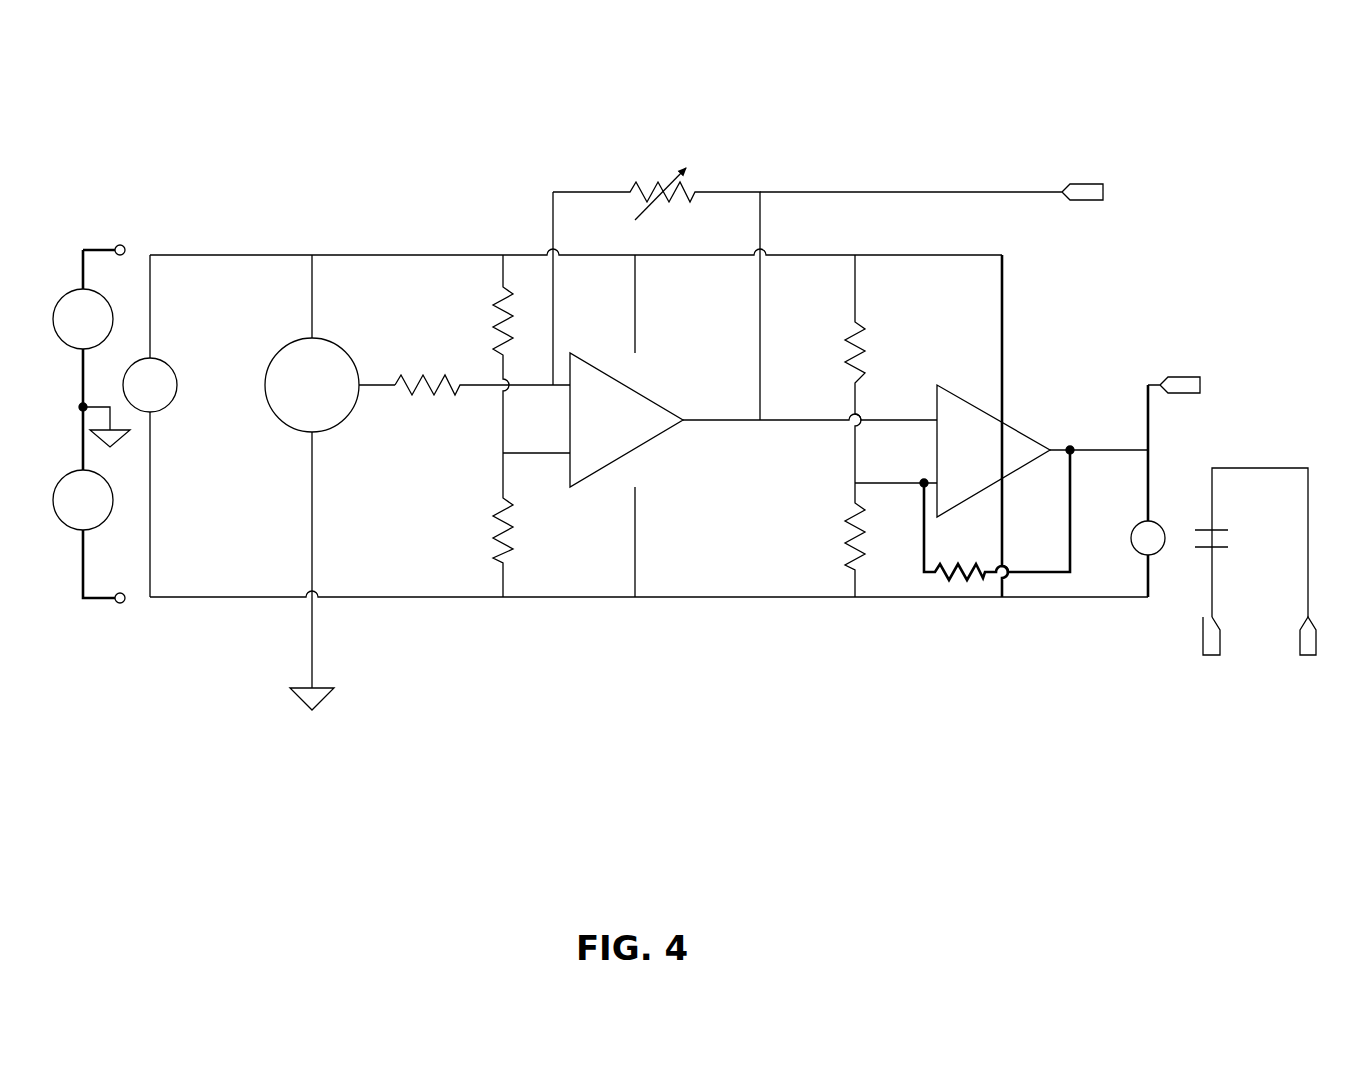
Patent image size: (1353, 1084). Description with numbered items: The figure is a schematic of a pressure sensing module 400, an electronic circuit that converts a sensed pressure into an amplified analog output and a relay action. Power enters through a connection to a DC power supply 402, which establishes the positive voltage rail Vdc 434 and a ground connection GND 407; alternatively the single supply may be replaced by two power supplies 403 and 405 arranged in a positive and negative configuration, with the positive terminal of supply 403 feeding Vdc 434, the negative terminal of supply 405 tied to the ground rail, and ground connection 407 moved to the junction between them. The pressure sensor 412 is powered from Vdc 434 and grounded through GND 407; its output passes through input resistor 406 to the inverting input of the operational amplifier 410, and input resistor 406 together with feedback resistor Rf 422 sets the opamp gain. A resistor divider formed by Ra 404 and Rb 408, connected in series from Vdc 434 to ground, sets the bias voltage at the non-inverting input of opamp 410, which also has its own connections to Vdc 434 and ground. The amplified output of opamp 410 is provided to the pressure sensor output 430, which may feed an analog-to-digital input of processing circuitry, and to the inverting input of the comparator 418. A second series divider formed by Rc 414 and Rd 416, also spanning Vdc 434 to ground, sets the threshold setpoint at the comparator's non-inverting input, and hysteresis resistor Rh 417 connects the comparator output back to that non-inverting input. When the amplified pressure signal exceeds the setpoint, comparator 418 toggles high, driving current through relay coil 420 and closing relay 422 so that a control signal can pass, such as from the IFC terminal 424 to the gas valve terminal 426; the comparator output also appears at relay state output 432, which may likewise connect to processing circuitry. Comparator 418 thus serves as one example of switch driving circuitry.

The pressure sensing module 400 is at (188, 86).
The DC power supply 402 is at (195, 413).
The DC power supply 403 is at (71, 222).
The resistor Ra 404 is at (420, 342).
The DC power supply 405 is at (71, 671).
The input resistor 406 is at (410, 455).
The ground connection 407 is at (350, 714).
The resistor Rb 408 is at (418, 558).
The operational amplifier 410 is at (618, 464).
The pressure sensor 412 is at (290, 442).
The resistor Rc 414 is at (878, 368).
The resistor Rd 416 is at (878, 564).
The hysteresis resistor Rh 417 is at (946, 662).
The comparator 418 is at (1010, 418).
The relay coil 420 is at (1113, 687).
The relay contacts 422 is at (1282, 561).
The from IFC terminal 424 is at (1205, 739).
The to gas valve terminal 426 is at (1295, 739).
The pressure sensor output 430 is at (1198, 236).
The relay state output 432 is at (1258, 404).
The positive voltage rail Vdc 434 is at (211, 280).